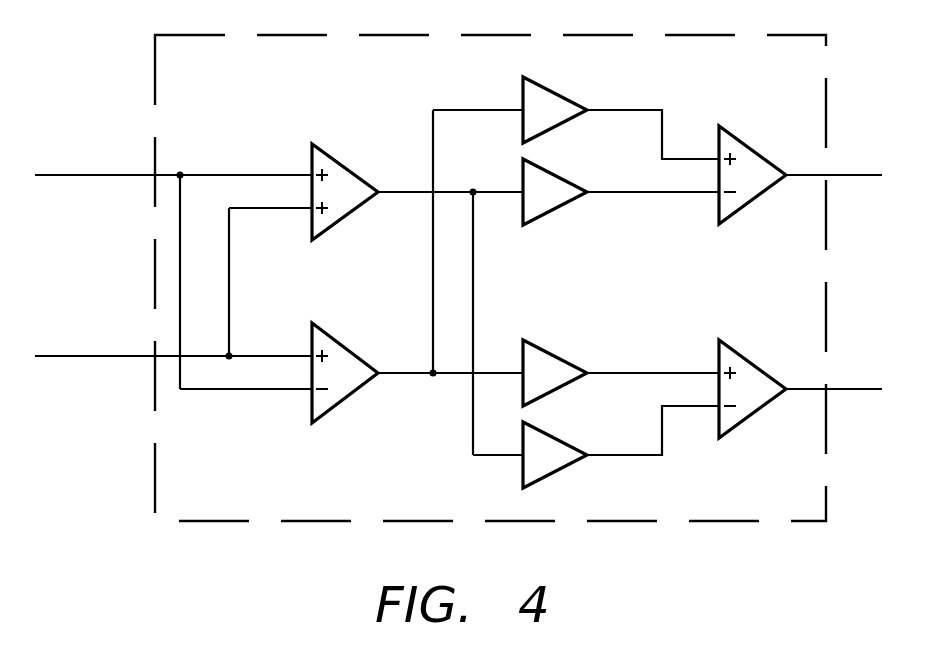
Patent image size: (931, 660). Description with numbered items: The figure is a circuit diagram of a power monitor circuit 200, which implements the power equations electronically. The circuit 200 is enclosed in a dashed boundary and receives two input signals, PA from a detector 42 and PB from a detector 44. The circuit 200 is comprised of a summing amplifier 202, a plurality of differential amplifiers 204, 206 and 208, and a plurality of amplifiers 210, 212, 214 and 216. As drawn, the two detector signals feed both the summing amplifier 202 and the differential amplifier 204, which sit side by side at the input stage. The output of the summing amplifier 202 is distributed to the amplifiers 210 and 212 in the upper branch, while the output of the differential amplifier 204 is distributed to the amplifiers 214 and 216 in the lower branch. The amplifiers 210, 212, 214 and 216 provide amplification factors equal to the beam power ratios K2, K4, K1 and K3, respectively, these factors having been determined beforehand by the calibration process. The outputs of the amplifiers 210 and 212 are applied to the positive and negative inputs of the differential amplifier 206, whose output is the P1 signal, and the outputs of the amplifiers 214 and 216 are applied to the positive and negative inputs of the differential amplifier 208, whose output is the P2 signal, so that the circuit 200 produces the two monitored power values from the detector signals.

The power monitor circuit 200 is at (155, 521).
The detector (PA source) 42 is at (173, 267).
The detector (PB source) 44 is at (173, 330).
The summing amplifier 202 is at (341, 158).
The differential amplifier 204 is at (341, 339).
The differential amplifier 206 is at (745, 143).
The differential amplifier 208 is at (745, 357).
The amplifier 210 is at (555, 90).
The amplifier 212 is at (570, 180).
The amplifier 214 is at (555, 353).
The amplifier 216 is at (570, 443).